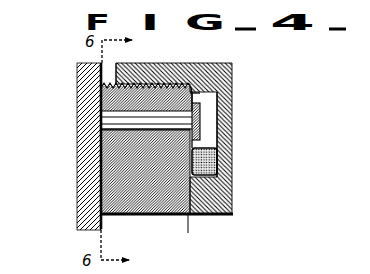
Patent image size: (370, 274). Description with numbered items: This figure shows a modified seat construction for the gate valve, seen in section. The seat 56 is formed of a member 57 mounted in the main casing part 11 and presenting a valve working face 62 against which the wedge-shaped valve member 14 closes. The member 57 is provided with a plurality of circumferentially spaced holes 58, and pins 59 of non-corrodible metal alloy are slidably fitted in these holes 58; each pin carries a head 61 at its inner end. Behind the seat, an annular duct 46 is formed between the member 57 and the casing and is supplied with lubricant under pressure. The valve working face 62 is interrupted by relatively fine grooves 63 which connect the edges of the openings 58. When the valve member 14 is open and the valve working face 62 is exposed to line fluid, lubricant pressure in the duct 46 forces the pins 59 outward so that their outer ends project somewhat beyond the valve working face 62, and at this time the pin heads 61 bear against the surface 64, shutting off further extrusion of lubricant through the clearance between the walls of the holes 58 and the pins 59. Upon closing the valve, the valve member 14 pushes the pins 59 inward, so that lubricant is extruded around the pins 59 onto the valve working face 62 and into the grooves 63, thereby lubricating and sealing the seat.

The main casing part 11 is at (210, 194).
The valve member 14 is at (80, 77).
The annular duct 46 is at (207, 103).
The seat 56 is at (164, 205).
The member 57 is at (127, 205).
The holes 58 is at (100, 137).
The pins 59 is at (113, 114).
The pin heads 61 is at (200, 128).
The valve working face 62 is at (100, 193).
The grooves 63 is at (100, 121).
The surface 64 is at (200, 93).